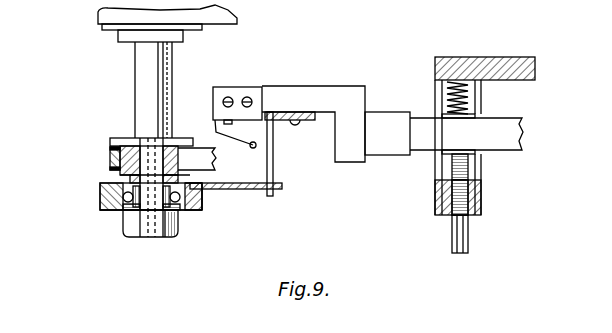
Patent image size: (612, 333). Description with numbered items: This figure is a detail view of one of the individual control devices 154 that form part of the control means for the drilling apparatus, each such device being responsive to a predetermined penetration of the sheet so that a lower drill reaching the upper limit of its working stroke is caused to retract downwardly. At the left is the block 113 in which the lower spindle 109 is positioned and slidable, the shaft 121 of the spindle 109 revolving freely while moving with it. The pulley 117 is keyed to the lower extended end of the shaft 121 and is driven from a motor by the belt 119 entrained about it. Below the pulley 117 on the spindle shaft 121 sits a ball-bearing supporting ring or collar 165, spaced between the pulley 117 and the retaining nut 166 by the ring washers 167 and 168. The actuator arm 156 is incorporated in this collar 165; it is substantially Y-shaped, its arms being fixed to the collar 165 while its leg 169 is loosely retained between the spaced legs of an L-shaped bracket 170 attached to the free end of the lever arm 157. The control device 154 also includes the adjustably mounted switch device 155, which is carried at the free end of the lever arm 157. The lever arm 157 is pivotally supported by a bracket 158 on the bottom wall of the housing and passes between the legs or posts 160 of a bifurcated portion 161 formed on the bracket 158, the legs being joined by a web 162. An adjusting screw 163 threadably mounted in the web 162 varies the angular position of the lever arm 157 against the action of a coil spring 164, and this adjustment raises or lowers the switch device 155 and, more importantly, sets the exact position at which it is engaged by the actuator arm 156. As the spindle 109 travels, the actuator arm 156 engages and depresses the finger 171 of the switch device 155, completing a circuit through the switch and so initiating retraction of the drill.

The block 113 is at (98, 15).
The lower spindle 109 is at (134, 62).
The shaft 121 is at (146, 85).
The pulley 117 is at (118, 139).
The belt 119 is at (112, 156).
The ring washer 168 is at (132, 181).
The ball-bearing supporting ring or collar 165 is at (100, 199).
The ring washer 167 is at (133, 208).
The retaining nut 166 is at (150, 225).
The control device 154 is at (179, 240).
The actuator arm 156 is at (198, 214).
The leg 169 is at (232, 190).
The L-shaped bracket 170 is at (273, 165).
The finger 171 is at (246, 146).
The switch device 155 is at (237, 98).
The lever arm 157 is at (388, 130).
The bracket 158 is at (497, 66).
The coil spring 164 is at (470, 99).
The legs or posts 160 is at (441, 168).
The bifurcated portion 161 is at (470, 170).
The web 162 is at (482, 198).
The adjusting screw 163 is at (458, 239).